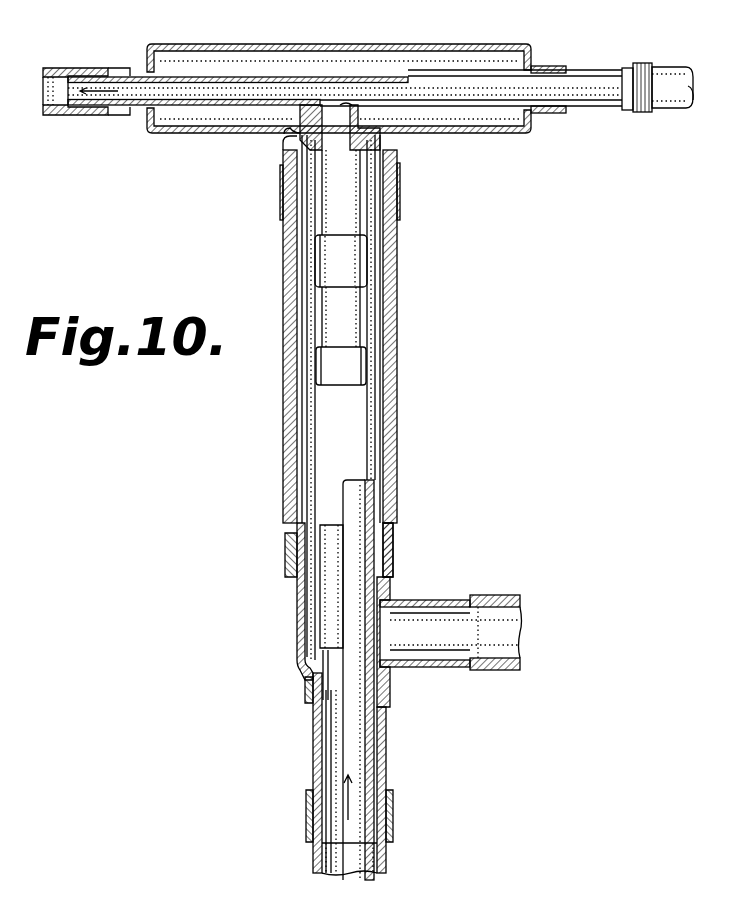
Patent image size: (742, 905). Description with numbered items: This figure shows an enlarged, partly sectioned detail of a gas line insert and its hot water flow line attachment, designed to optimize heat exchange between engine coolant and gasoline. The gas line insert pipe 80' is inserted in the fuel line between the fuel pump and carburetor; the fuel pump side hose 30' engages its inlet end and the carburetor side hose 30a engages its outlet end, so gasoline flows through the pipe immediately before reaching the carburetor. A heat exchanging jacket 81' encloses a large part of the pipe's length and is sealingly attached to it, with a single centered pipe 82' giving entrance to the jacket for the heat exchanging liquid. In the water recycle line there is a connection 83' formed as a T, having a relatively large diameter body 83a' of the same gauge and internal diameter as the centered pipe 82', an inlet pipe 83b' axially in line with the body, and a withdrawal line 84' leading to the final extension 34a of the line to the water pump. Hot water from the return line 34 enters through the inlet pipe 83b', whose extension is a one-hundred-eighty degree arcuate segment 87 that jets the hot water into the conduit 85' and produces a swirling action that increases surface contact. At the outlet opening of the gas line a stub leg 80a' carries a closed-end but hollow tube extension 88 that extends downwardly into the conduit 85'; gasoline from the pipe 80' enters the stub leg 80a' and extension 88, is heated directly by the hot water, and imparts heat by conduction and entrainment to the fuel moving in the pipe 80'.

The carburetor side hose 30a is at (64, 66).
The heat exchanging jacket 81' is at (339, 75).
The gas line insert pipe 80' is at (471, 102).
The fuel pump side hose 30' is at (665, 100).
The stub leg 80a' is at (344, 119).
The centered pipe 82' is at (369, 417).
The tube extension 88 is at (367, 265).
The conduit 85' is at (318, 356).
The arcuate segment 87 is at (355, 480).
The connection 83' is at (307, 588).
The connection body 83a' is at (310, 615).
The inlet pipe 83b' is at (368, 773).
The withdrawal line 84' is at (450, 614).
The water pump extension line 34a is at (499, 595).
The hot water return line 34 is at (308, 867).